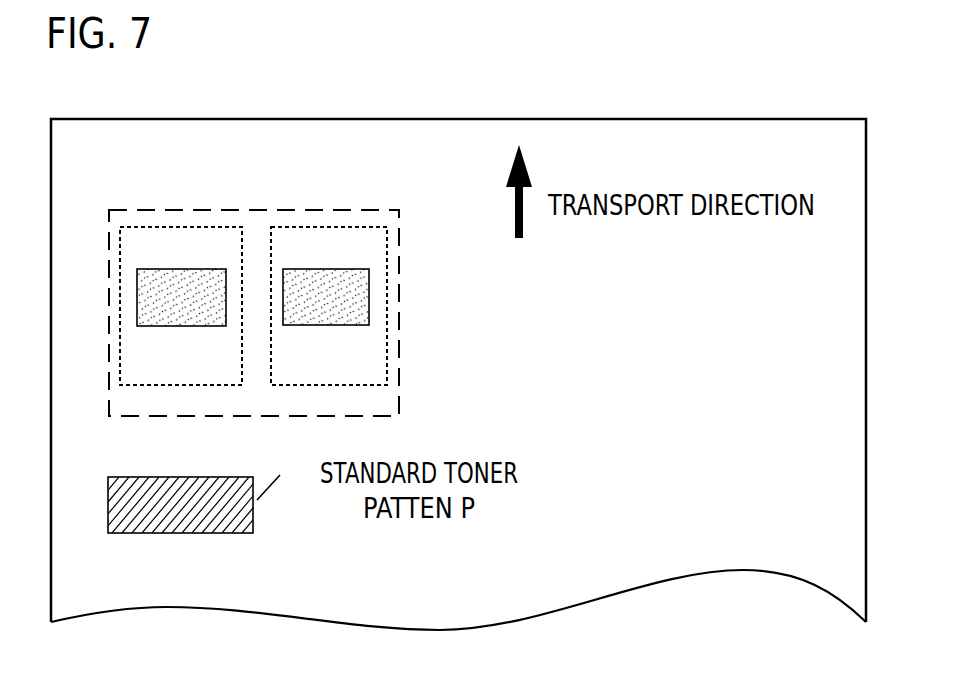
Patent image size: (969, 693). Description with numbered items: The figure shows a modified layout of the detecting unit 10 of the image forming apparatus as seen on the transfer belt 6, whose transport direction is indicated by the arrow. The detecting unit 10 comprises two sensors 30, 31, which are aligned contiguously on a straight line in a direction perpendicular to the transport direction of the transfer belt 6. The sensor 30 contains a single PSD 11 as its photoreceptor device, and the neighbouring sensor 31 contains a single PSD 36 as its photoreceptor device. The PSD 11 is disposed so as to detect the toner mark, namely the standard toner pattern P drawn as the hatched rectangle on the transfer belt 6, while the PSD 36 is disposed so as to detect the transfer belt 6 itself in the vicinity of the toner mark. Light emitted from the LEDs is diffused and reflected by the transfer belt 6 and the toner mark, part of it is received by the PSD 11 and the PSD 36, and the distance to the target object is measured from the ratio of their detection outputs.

The transfer belt 6 is at (543, 593).
The detecting unit 10 is at (399, 209).
The PSD 11 is at (195, 269).
The sensor 30 is at (133, 355).
The sensor 31 is at (370, 355).
The PSD 36 is at (370, 295).